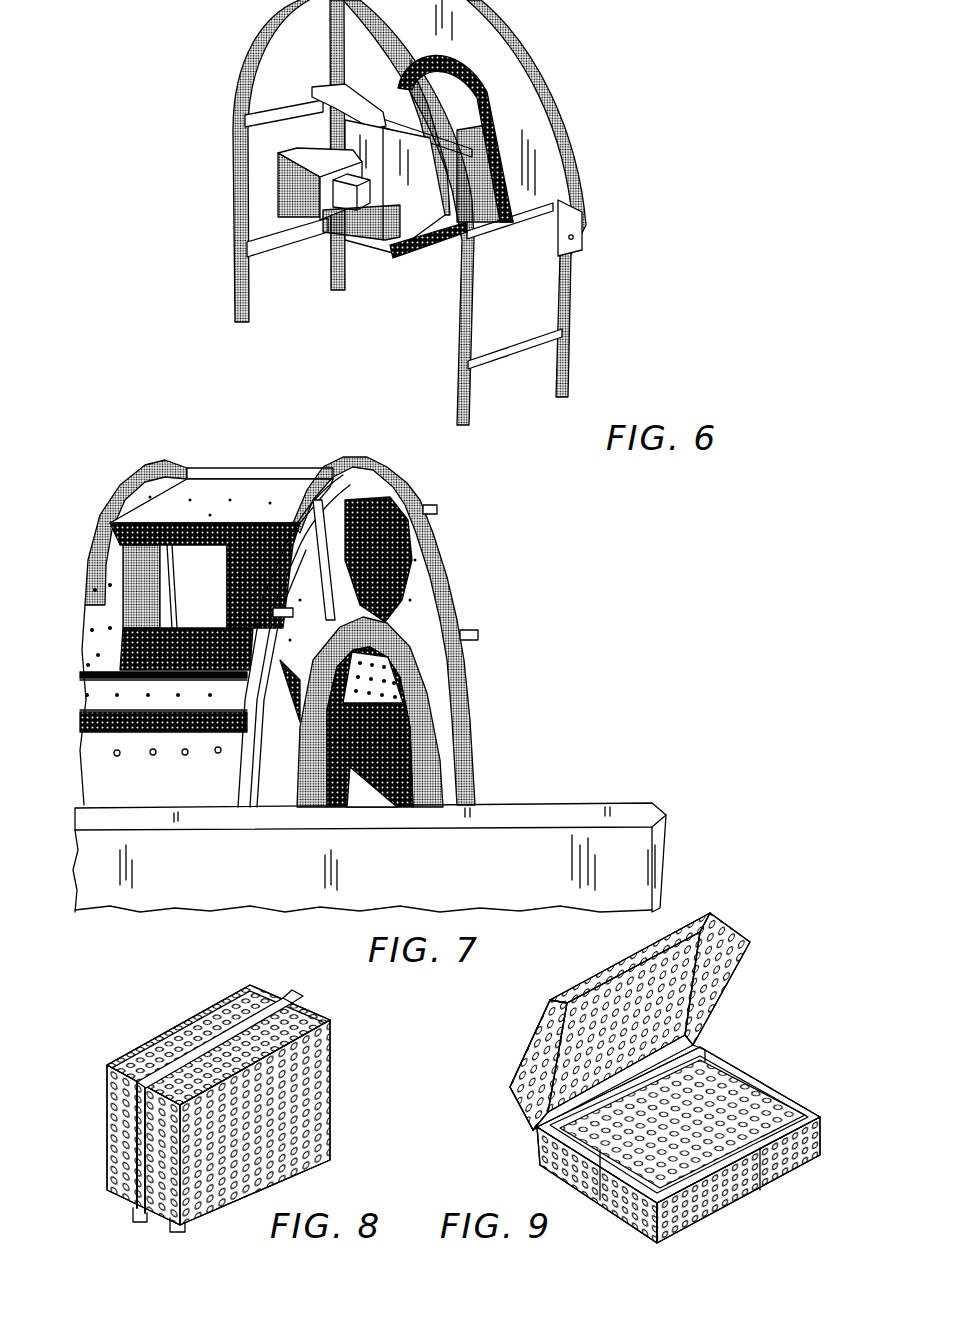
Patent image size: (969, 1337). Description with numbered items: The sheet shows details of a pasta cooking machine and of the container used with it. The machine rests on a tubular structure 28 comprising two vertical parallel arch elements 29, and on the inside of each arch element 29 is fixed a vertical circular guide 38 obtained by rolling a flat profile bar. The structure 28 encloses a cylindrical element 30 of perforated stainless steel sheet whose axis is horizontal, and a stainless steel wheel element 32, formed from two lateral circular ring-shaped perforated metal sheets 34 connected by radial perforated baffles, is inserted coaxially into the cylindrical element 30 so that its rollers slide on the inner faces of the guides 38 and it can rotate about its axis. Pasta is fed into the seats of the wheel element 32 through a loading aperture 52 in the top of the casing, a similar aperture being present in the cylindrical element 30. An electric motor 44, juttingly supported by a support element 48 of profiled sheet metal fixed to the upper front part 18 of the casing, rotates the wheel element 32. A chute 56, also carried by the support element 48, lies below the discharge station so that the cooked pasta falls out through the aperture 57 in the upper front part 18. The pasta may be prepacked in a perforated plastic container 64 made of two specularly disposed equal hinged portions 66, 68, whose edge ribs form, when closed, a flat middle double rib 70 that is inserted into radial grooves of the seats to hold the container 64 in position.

In FIG. 6, the upper front part 18 is at (537, 173).
In FIG. 6, the tubular structure 28 is at (568, 363).
In FIG. 7, the tubular structure 28 is at (108, 473).
In FIG. 6, the arch element 29 is at (457, 293).
In FIG. 7, the arch element 29 is at (150, 457).
In FIG. 7, the cylindrical element 30 is at (235, 497).
In FIG. 7, the wheel element 32 is at (422, 603).
In FIG. 7, the lateral circular ring-shaped perforated metal sheet 34 is at (397, 483).
In FIG. 7, the vertical circular guide 38 is at (472, 712).
In FIG. 6, the electric motor 44 is at (320, 153).
In FIG. 6, the support element 48 is at (428, 256).
In FIG. 7, the support element 48 is at (290, 785).
In FIG. 7, the loading aperture 52 is at (183, 523).
In FIG. 6, the chute 56 is at (447, 160).
In FIG. 6, the aperture 57 is at (475, 78).
In FIG. 8, the container 64 is at (185, 1012).
In FIG. 9, the container portion 66 is at (723, 927).
In FIG. 9, the container portion 68 is at (743, 1197).
In FIG. 8, the double rib 70 is at (233, 1020).